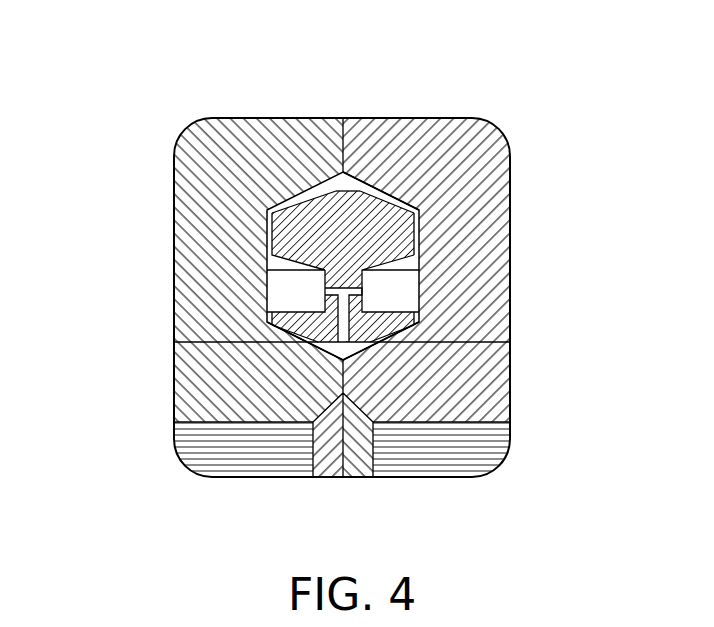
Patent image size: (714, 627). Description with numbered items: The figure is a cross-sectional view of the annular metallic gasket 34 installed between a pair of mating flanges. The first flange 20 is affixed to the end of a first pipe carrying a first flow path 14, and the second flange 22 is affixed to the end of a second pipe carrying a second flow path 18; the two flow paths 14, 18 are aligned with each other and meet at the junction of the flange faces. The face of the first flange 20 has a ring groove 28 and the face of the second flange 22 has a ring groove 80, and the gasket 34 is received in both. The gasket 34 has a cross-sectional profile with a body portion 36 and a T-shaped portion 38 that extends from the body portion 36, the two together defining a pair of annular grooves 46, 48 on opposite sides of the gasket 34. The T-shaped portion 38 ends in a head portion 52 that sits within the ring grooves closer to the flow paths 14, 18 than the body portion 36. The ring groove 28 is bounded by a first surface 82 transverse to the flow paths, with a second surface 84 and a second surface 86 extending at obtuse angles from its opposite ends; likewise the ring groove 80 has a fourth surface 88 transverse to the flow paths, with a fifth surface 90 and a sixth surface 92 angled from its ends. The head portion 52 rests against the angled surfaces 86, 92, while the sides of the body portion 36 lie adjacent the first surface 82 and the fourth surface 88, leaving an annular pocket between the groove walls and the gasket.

The first flow path 14 is at (240, 466).
The second flow path 18 is at (452, 466).
The first flange 20 is at (223, 176).
The second flange 22 is at (462, 341).
The ring groove 28 is at (328, 185).
The gasket 34 is at (352, 183).
The body portion 36 is at (419, 210).
The T-shaped portion 38 is at (283, 331).
The annular groove 46 is at (277, 293).
The annular groove 48 is at (383, 268).
The head portion 52 is at (419, 305).
The ring groove 80 is at (402, 187).
The first surface 82 is at (263, 268).
The second surface 84 is at (337, 178).
The second surface 86 is at (283, 343).
The fourth surface 88 is at (419, 257).
The fifth surface 90 is at (372, 185).
The sixth surface 92 is at (387, 338).